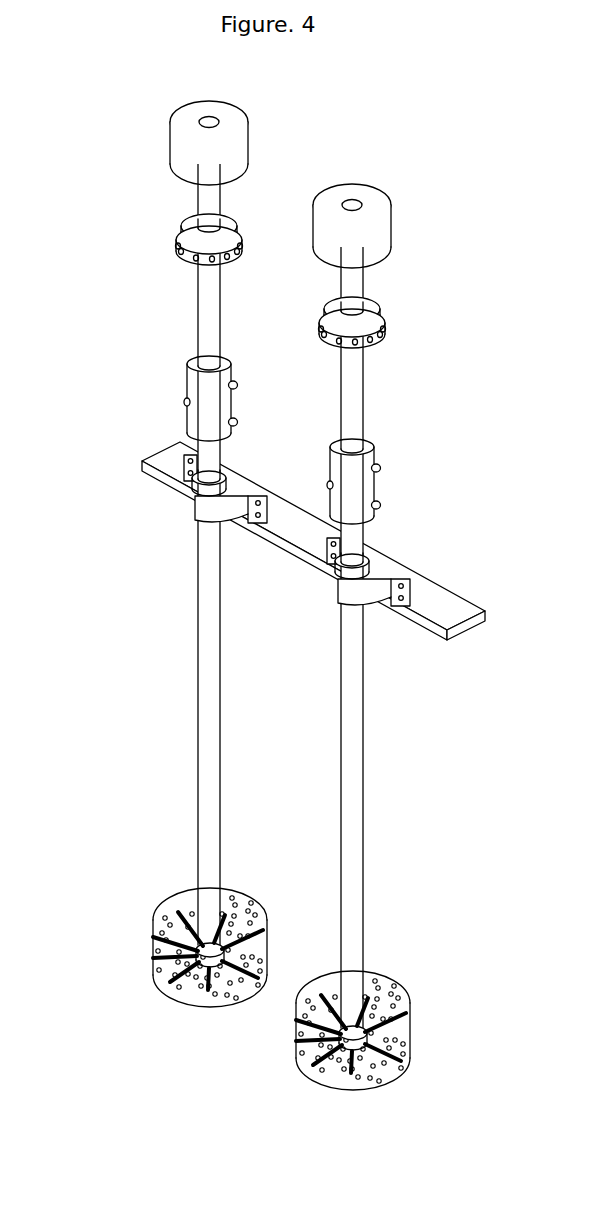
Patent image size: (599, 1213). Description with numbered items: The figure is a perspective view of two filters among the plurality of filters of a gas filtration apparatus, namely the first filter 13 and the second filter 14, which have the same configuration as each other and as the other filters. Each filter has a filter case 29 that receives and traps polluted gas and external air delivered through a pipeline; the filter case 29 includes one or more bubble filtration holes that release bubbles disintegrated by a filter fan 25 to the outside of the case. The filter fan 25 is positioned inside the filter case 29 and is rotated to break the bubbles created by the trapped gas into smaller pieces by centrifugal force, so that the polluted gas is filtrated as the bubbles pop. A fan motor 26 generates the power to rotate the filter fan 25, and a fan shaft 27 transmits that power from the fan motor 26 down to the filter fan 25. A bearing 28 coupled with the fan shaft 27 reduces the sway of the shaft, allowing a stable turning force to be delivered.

The first filter 13 is at (170, 976).
The second filter 14 is at (352, 1067).
The filter fan 25 is at (162, 966).
The fan motor 26 is at (190, 177).
The fan shaft 27 is at (200, 316).
The bearing 28 is at (195, 513).
The filter case 29 is at (163, 902).